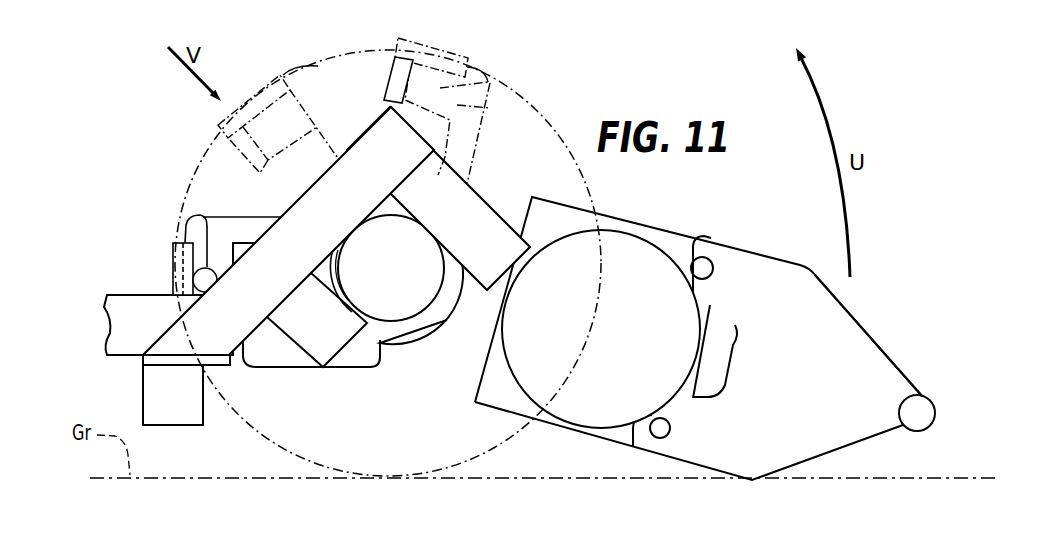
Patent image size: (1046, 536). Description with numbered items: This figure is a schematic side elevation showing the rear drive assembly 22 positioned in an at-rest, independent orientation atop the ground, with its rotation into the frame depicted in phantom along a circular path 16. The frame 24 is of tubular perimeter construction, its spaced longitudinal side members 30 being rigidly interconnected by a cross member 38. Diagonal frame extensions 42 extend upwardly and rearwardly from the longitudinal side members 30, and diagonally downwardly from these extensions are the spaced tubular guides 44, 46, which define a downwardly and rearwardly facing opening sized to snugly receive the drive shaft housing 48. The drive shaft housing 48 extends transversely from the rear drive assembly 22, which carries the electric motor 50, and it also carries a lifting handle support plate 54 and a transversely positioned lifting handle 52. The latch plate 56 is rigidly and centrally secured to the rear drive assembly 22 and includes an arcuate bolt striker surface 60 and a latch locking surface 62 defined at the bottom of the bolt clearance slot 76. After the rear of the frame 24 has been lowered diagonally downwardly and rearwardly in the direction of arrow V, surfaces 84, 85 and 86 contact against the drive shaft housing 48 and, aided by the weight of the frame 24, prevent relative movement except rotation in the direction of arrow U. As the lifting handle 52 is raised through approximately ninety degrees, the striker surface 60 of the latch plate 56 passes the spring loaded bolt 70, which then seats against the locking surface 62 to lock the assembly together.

The circular path of rotation 16 is at (260, 437).
The rear drive assembly 22 is at (718, 236).
The frame 24 is at (150, 285).
The longitudinal side members 30 is at (125, 295).
The cross member 38 is at (175, 427).
The diagonal frame extensions 42 is at (368, 130).
The tubular guide 44 is at (292, 345).
The tubular guide 46 is at (477, 192).
The drive shaft housing 48 is at (399, 325).
The electric motor 50 is at (630, 231).
The lifting handle 52 is at (930, 394).
The lifting handle support plate 54 is at (850, 310).
The latch plate 56 is at (413, 40).
The bolt striker surface 60 is at (376, 45).
The latch locking surface 62 is at (490, 82).
The bolt 70 is at (200, 214).
The bolt clearance slot 76 is at (483, 107).
The contact surface 84 is at (428, 238).
The contact surface 85 is at (355, 236).
The contact surface 86 is at (350, 303).